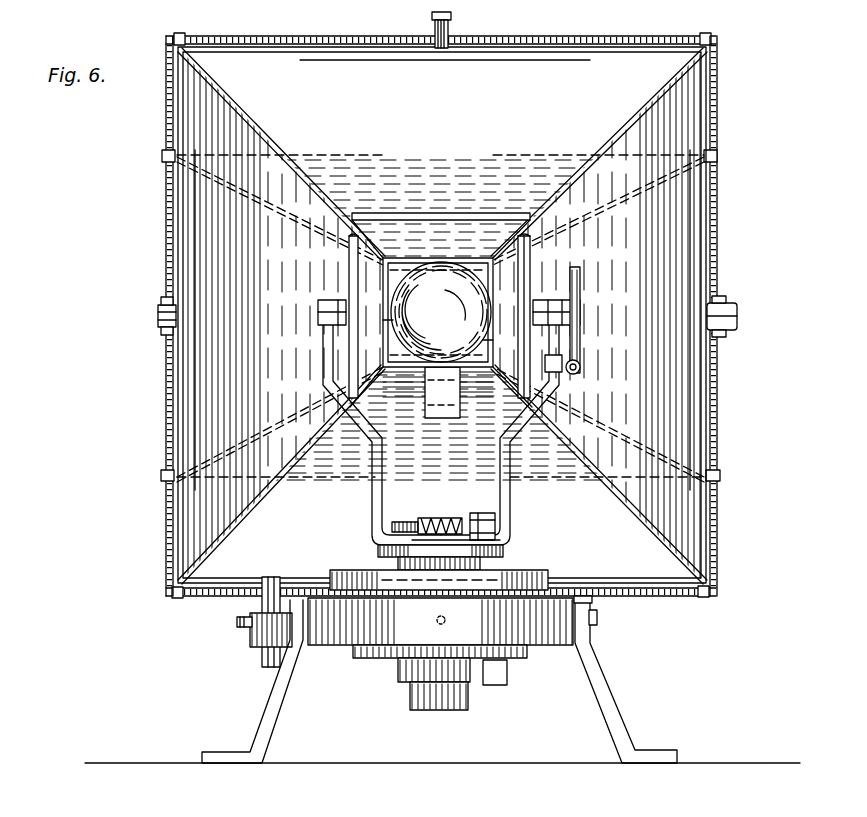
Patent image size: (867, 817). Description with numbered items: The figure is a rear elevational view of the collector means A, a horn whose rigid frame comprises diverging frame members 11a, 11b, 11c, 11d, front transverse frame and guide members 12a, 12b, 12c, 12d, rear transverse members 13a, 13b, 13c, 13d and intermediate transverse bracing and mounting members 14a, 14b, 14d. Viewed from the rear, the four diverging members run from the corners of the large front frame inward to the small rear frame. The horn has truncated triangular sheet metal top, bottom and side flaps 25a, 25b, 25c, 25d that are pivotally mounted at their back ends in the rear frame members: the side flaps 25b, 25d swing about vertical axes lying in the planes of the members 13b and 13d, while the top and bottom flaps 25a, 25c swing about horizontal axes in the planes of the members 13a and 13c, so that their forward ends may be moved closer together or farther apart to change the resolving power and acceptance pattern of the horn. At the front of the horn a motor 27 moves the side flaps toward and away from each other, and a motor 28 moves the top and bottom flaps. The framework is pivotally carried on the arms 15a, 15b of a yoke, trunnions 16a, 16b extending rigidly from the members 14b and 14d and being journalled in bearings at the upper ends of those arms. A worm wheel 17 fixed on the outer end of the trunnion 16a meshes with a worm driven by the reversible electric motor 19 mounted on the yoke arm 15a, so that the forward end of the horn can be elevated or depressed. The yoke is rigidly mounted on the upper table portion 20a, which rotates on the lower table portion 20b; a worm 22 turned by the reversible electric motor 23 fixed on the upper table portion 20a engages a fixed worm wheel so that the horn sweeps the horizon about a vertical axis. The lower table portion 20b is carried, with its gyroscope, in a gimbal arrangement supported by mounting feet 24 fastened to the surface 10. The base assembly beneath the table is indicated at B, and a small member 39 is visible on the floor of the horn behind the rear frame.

The surface 10 is at (508, 759).
The diverging frame member 11a is at (250, 126).
The diverging frame member 11b is at (628, 128).
The diverging frame member 11c is at (640, 521).
The diverging frame member 11d is at (215, 530).
The front transverse frame and guide member 12a is at (566, 52).
The front transverse frame and guide member 12b is at (716, 201).
The front transverse frame and guide member 12c is at (649, 578).
The front transverse frame and guide member 12d is at (182, 221).
The rear transverse member 13a is at (410, 266).
The rear transverse member 13b is at (496, 341).
The rear transverse member 13c is at (478, 372).
The rear transverse member 13d is at (388, 326).
The intermediate transverse bracing and mounting member 14a is at (410, 217).
The intermediate transverse bracing and mounting member 14b is at (575, 256).
The intermediate transverse bracing and mounting member 14d is at (345, 255).
The yoke arm 15a is at (508, 462).
The yoke arm 15b is at (361, 440).
The trunnion 16a is at (558, 300).
The trunnion 16b is at (335, 305).
The worm wheel 17 is at (581, 290).
The electric motor 19 is at (582, 372).
The upper table portion 20a is at (508, 545).
The lower table portion 20b is at (505, 552).
The worm 22 is at (438, 520).
The reversible electric motor 23 is at (481, 513).
The mounting feet 24 is at (600, 689).
The top flap 25a is at (385, 82).
The side flap 25b is at (662, 296).
The bottom flap 25c is at (272, 541).
The side flap 25d is at (225, 386).
The motor 27 is at (452, 27).
The motor 28 is at (738, 314).
The tab 39 is at (433, 388).
The collector means A is at (398, 307).
The base B is at (348, 657).